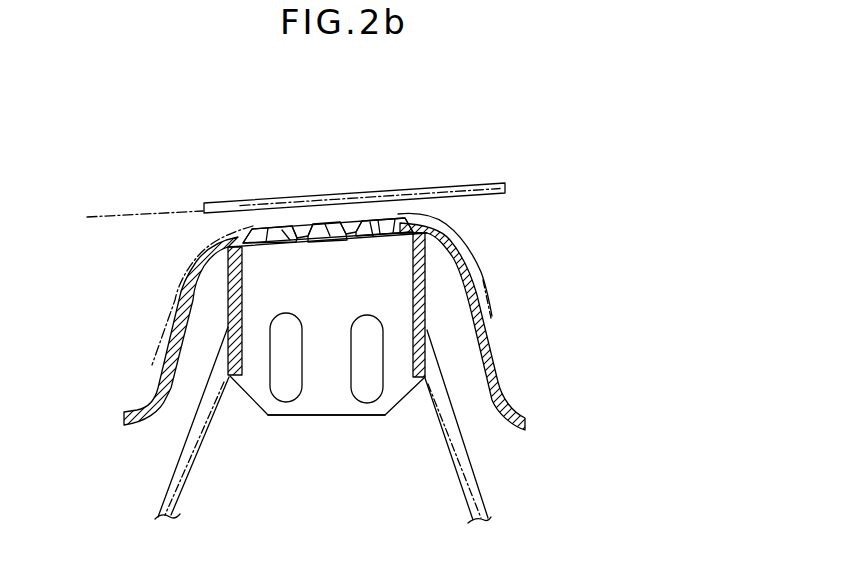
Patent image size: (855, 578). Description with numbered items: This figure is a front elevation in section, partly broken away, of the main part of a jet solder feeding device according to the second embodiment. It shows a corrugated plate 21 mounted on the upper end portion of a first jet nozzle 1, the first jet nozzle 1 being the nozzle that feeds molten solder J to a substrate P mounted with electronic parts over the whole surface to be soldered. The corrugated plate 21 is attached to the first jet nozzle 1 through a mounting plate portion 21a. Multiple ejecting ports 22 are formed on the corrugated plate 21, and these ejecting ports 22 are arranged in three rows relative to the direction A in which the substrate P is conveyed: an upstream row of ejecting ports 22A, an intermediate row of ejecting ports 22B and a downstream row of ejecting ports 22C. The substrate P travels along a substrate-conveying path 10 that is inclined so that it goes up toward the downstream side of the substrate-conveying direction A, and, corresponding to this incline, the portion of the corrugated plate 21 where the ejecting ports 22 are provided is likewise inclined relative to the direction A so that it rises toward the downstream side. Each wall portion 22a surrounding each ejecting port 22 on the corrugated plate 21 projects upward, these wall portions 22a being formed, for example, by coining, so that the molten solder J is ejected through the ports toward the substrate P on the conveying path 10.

The first jet nozzle 1 is at (358, 373).
The substrate-conveying path 10 is at (122, 216).
The corrugated plate 21 is at (500, 380).
The mounting plate portion 21a is at (320, 398).
The ejecting ports 22 is at (347, 177).
The upstream row of ejecting ports 22A is at (272, 235).
The intermediate row of ejecting ports 22B is at (327, 228).
The downstream row of ejecting ports 22C is at (388, 227).
The wall portion 22a is at (410, 207).
The substrate P is at (493, 182).
The molten solder J is at (170, 307).
The substrate-conveying direction A is at (328, 178).